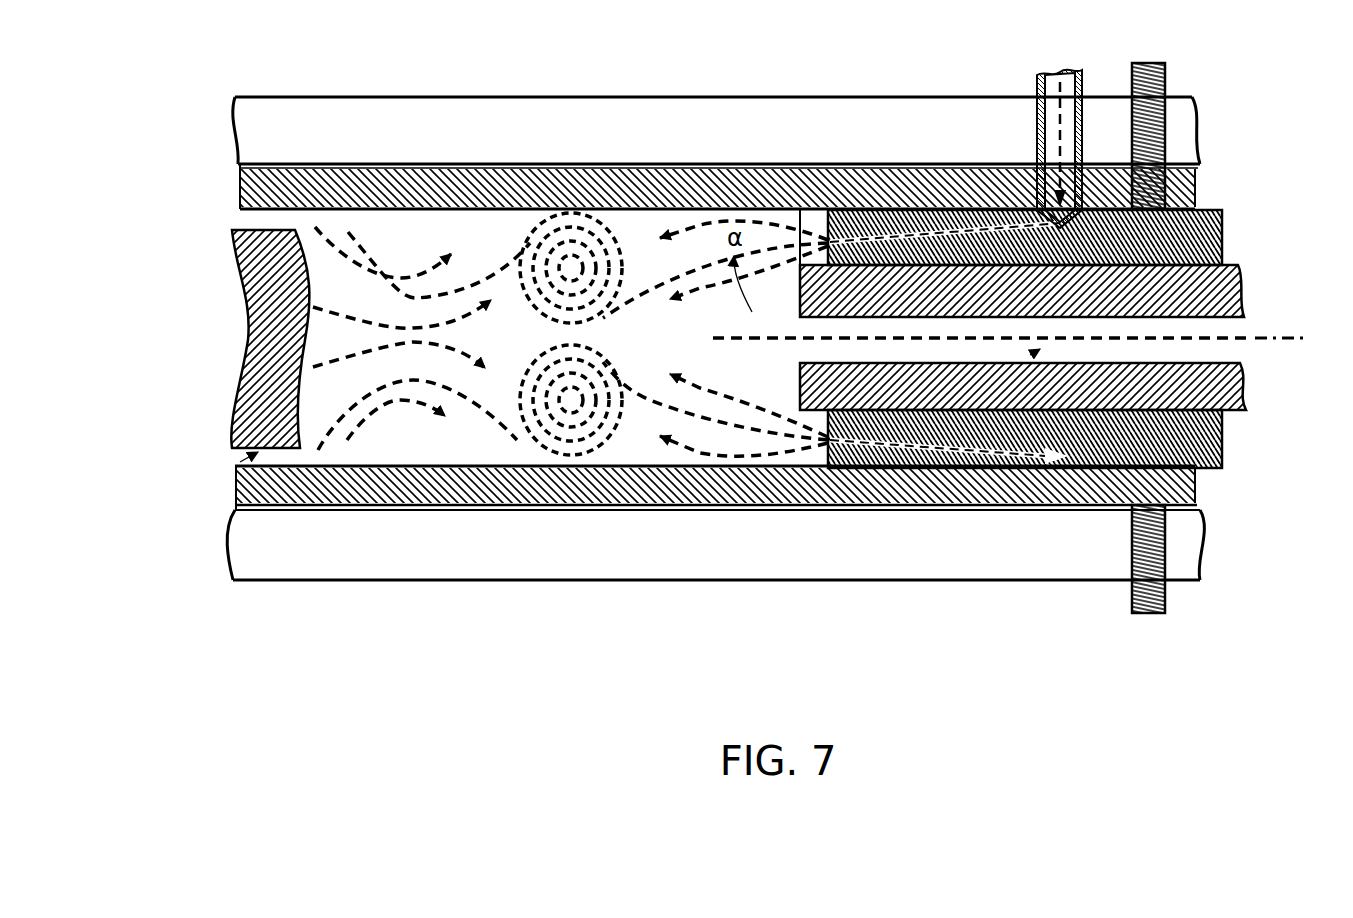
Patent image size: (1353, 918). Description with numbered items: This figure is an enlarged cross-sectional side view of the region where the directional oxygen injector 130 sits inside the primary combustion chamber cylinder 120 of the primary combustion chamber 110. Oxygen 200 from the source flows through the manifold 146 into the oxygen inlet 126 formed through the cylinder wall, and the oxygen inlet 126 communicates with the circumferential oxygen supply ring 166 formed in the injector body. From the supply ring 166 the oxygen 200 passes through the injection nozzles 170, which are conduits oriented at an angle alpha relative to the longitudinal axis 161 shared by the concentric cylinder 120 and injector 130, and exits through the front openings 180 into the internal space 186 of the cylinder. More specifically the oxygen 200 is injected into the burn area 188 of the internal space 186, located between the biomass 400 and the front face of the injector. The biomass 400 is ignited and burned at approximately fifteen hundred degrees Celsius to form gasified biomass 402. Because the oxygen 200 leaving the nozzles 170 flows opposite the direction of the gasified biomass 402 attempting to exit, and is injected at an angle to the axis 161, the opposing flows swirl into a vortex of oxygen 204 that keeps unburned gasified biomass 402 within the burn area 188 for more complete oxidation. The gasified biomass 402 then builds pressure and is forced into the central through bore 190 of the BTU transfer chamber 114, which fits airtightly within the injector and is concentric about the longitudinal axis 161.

The primary combustion chamber 110 is at (310, 505).
The BTU transfer chamber 114 is at (1245, 388).
The primary combustion chamber cylinder 120 is at (490, 510).
The oxygen inlet 126 is at (1033, 185).
The directional oxygen injector 130 is at (1222, 240).
The manifold 146 is at (1083, 75).
The longitudinal axis 161 is at (1262, 338).
The circumferential oxygen supply ring 166 is at (1222, 215).
The injection nozzle 170 is at (915, 205).
The front opening 180 is at (828, 228).
The internal space 186 is at (250, 508).
The burn area 188 is at (426, 448).
The central through bore 190 is at (1013, 470).
The oxygen 200 is at (695, 222).
The vortex of oxygen 204 is at (625, 232).
The biomass 400 is at (262, 335).
The gasified biomass 402 is at (407, 262).